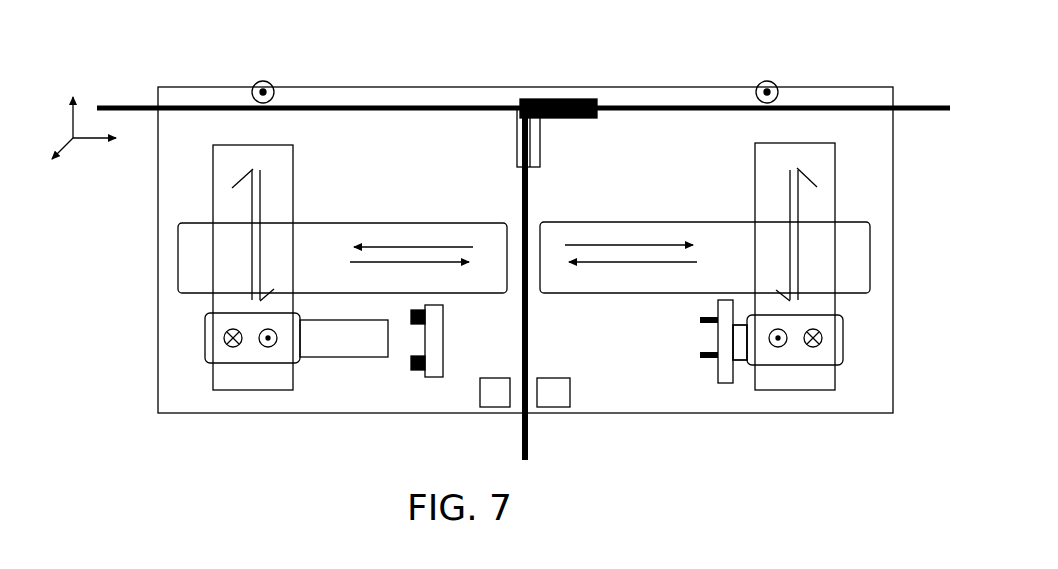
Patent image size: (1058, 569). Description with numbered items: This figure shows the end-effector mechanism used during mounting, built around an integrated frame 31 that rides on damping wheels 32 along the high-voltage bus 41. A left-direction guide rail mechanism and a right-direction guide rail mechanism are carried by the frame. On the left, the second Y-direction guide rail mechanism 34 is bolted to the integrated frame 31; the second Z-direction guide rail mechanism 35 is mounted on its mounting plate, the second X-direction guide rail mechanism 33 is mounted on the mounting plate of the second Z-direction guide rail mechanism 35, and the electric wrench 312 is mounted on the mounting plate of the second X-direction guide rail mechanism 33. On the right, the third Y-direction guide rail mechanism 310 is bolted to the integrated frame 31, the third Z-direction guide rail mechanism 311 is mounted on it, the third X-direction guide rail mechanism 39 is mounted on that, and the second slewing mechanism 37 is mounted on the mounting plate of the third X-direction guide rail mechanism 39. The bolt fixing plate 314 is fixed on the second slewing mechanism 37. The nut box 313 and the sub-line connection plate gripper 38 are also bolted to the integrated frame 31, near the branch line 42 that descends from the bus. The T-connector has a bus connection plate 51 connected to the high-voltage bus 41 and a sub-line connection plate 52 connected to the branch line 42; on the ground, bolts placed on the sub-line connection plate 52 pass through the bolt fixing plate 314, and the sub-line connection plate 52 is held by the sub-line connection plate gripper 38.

The integrated frame 31 is at (440, 127).
The damping wheels 32 is at (771, 90).
The second X-direction guide rail mechanism 33 is at (250, 350).
The second Y-direction guide rail mechanism 34 is at (330, 245).
The second Z-direction guide rail mechanism 35 is at (250, 291).
The second slewing mechanism 37 is at (747, 352).
The sub-line connection plate gripper 38 is at (500, 390).
The third X-direction guide rail mechanism 39 is at (813, 353).
The high-voltage bus 41 is at (245, 106).
The branch line 42 is at (530, 355).
The bus connection plate 51 is at (578, 118).
The sub-line connection plate 52 is at (520, 130).
The third Y-direction guide rail mechanism 310 is at (713, 258).
The third Z-direction guide rail mechanism 311 is at (817, 293).
The electric wrench 312 is at (337, 337).
The nut box 313 is at (410, 367).
The bolt fixing plate 314 is at (742, 352).